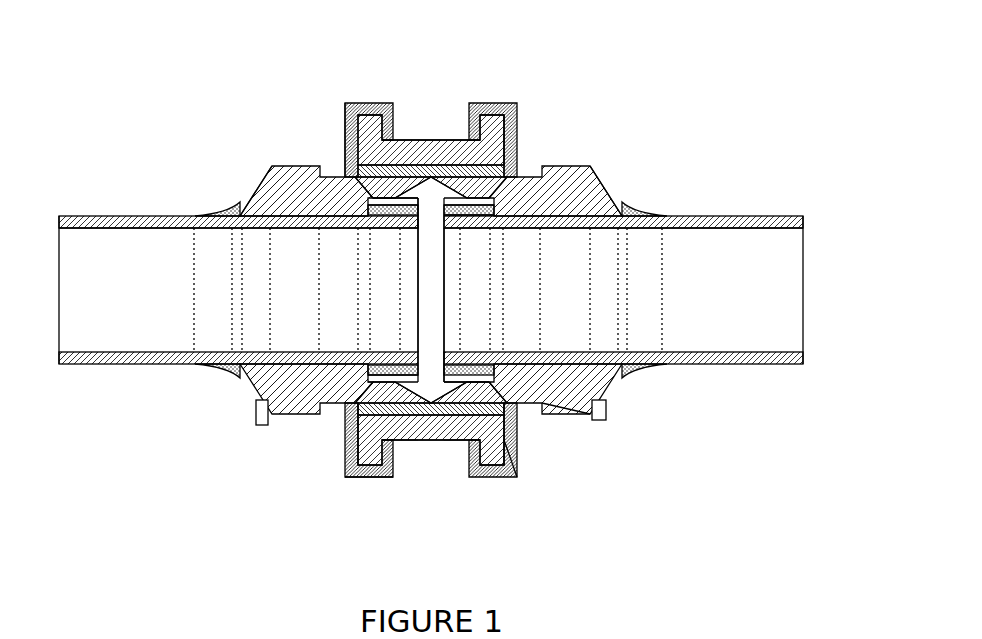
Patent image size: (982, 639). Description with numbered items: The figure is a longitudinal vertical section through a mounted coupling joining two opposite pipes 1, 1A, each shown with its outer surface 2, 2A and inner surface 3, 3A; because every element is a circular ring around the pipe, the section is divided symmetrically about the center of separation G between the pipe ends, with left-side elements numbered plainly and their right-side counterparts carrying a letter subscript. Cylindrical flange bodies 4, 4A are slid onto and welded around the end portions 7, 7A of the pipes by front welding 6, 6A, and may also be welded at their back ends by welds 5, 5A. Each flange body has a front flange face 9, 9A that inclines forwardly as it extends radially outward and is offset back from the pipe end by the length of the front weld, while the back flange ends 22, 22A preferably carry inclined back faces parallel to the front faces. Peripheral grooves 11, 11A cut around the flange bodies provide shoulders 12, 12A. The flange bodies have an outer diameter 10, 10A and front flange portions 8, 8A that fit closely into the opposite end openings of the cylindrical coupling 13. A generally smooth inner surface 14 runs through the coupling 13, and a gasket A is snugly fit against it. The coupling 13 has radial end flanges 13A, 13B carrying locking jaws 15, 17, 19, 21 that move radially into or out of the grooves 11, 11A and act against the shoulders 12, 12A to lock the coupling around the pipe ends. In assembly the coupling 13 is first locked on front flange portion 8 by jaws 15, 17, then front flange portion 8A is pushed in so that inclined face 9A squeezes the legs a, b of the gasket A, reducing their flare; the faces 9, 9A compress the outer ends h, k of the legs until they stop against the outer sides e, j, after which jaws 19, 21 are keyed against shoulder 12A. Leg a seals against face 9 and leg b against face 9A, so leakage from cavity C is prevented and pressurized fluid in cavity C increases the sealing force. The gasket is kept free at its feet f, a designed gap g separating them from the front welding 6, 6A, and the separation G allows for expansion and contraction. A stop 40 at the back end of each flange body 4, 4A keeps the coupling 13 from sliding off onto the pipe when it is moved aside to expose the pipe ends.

The pipe 1 is at (85, 352).
The pipe 1A is at (712, 352).
The outer surface 2 is at (73, 216).
The outer surface 2A is at (772, 216).
The inner surface 3 is at (83, 229).
The inner surface 3A is at (778, 229).
The cylindrical flange body 4 is at (255, 384).
The cylindrical flange body 4A is at (604, 390).
The back weld 5 is at (228, 210).
The back weld 5A is at (638, 206).
The front welding 6 is at (402, 218).
The front welding 6A is at (460, 352).
The end portion 7 is at (418, 236).
The end portion 7A is at (483, 353).
The front flange portion 8 is at (398, 138).
The front flange portion 8A is at (518, 132).
The front flange face 9 is at (342, 397).
The front flange face 9A is at (526, 402).
The outer diameter 10 is at (282, 166).
The outer diameter 10A is at (566, 166).
The peripheral groove 11 is at (333, 175).
The peripheral groove 11A is at (530, 176).
The shoulder 12 is at (363, 217).
The shoulder 12A is at (503, 220).
The cylindrical coupling 13 is at (437, 172).
The radial end flange 13A is at (368, 124).
The radial end flange 13B is at (470, 466).
The inner surface 14 is at (418, 140).
The locking jaw 15 is at (344, 142).
The locking jaw 17 is at (364, 477).
The locking jaw 19 is at (506, 110).
The locking jaw 21 is at (514, 462).
The back flange end 22 is at (247, 196).
The back flange end 22A is at (612, 182).
The stop 40 is at (256, 416).
The gasket A is at (431, 190).
The gasket leg b is at (431, 381).
The gasket feet f is at (388, 216).
The designed gap g is at (398, 352).
The outer end of gasket leg h is at (368, 378).
The cavity C is at (418, 256).
The separation G is at (422, 290).
The outer side of gasket leg e is at (400, 441).
The gasket leg a is at (420, 441).
The outer side of gasket leg j is at (440, 441).
The outer end of gasket leg k is at (557, 405).